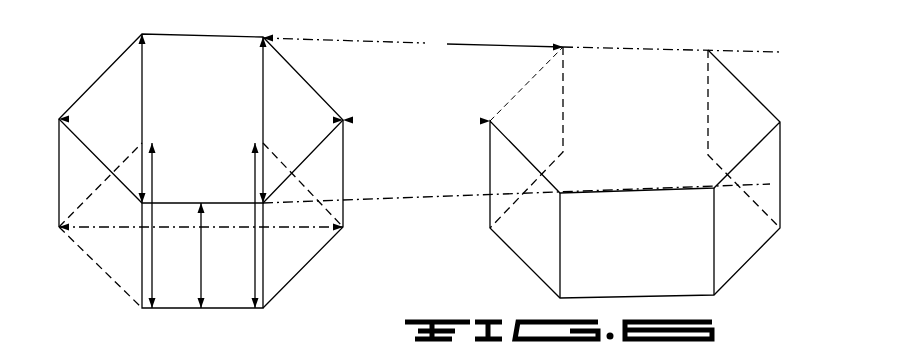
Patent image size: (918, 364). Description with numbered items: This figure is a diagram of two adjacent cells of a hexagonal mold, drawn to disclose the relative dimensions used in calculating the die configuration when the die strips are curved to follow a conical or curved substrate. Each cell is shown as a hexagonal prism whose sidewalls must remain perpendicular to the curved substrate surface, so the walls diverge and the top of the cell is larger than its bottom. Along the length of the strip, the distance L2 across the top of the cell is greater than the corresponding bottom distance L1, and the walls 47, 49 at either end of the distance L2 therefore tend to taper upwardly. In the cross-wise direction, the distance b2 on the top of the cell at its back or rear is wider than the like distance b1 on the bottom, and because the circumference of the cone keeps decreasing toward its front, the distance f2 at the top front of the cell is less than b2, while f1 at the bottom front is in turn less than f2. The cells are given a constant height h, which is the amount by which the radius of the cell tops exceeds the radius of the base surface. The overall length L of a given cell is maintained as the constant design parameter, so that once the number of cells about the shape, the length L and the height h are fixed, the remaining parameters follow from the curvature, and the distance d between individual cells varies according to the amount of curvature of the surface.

The wall 47 is at (56, 174).
The wall 49 is at (343, 180).
The distance b1 is at (158, 225).
The distance b2 is at (145, 118).
The distance f1 is at (250, 225).
The distance f2 is at (263, 120).
The height h is at (201, 255).
The distance L1 is at (201, 237).
The distance L2 is at (201, 125).
The length L is at (413, 48).
The distance d is at (416, 129).